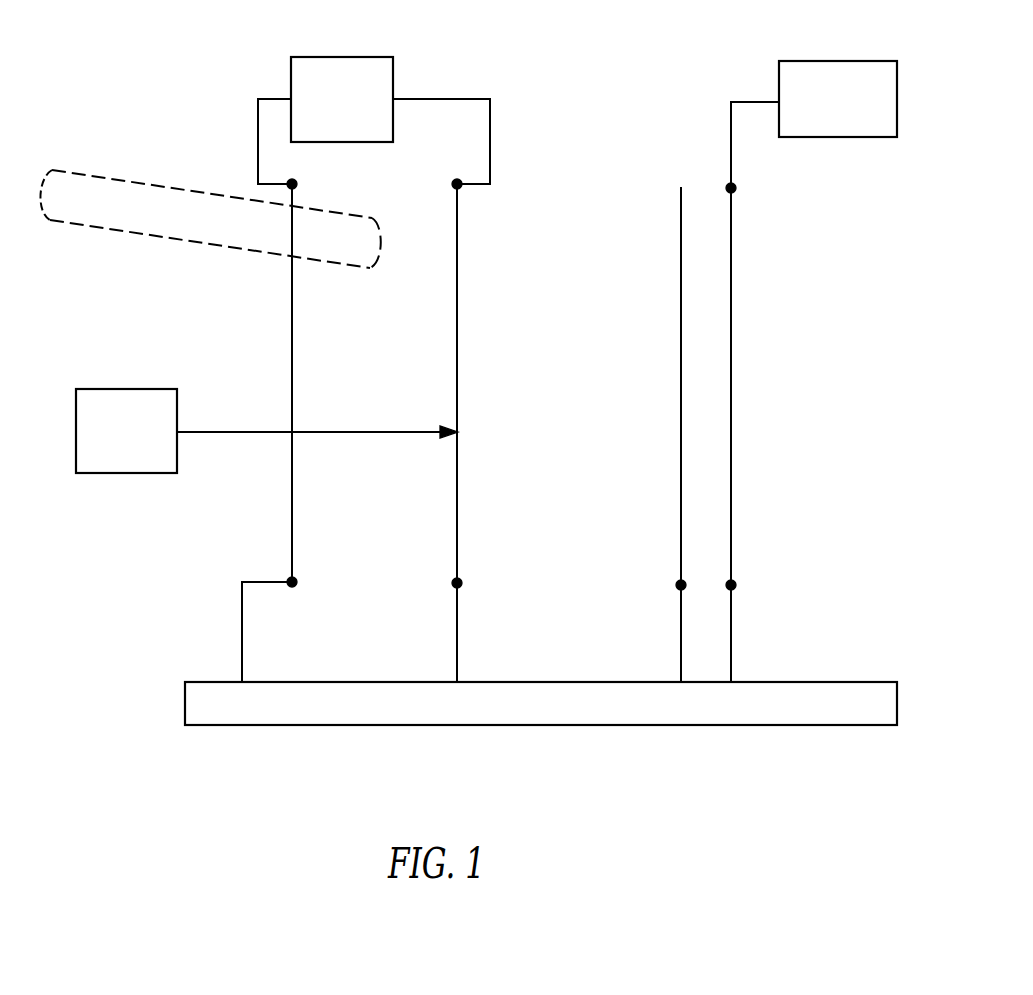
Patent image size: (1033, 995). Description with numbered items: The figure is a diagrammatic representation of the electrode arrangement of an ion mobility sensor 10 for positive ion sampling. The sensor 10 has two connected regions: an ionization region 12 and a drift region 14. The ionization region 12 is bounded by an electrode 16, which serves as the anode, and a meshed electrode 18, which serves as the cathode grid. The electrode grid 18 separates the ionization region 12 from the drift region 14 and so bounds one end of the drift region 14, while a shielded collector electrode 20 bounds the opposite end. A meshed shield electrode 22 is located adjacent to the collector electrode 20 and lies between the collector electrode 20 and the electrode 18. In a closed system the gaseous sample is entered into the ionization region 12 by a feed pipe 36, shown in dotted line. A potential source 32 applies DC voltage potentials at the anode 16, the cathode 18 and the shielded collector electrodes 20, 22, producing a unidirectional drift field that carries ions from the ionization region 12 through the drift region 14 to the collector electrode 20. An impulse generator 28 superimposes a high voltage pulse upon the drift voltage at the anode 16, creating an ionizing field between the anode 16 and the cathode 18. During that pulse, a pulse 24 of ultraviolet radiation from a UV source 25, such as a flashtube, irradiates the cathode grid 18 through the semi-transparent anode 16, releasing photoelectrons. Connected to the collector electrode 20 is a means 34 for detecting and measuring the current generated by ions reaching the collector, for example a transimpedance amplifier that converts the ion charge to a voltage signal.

The ion mobility sensor 10 is at (800, 281).
The ionization region 12 is at (398, 504).
The drift region 14 is at (583, 457).
The electrode 16 is at (292, 517).
The meshed electrode 18 is at (457, 540).
The collector electrode 20 is at (731, 523).
The meshed shield electrode 22 is at (681, 517).
The pulse of ultraviolet radiation 24 is at (264, 431).
The UV source 25 is at (150, 473).
The impulse generator 28 is at (393, 76).
The potential source 32 is at (204, 704).
The means for detecting and measuring current 34 is at (797, 61).
The feed pipe 36 is at (160, 207).